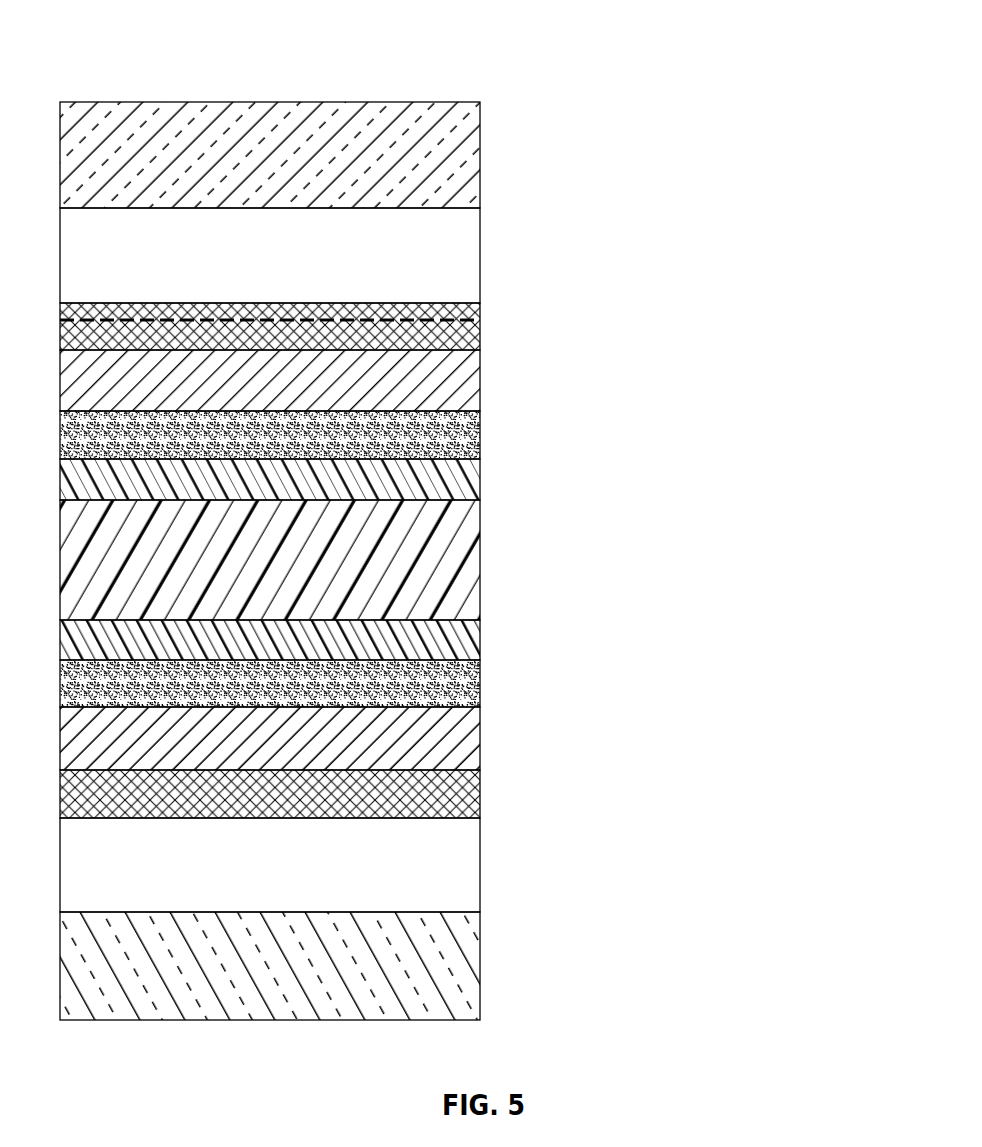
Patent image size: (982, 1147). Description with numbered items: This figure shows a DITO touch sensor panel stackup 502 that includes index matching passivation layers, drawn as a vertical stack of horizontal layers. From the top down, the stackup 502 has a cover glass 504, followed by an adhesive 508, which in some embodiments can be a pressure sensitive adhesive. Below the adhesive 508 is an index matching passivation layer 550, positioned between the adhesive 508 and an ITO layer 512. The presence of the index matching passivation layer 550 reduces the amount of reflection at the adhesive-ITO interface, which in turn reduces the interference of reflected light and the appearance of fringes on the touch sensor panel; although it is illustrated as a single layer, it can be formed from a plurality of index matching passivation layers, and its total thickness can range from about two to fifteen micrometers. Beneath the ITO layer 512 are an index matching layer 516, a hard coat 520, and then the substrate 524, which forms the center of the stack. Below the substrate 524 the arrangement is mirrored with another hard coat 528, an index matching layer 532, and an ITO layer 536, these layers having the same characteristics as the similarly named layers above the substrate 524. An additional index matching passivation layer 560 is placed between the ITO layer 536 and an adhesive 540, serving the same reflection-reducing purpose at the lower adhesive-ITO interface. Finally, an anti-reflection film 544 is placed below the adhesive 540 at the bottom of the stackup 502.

The DITO touch sensor panel stackup 502 is at (481, 47).
The cover glass 504 is at (480, 163).
The adhesive 508 is at (480, 262).
The index matching passivation layer 550 is at (480, 325).
The ITO layer 512 is at (480, 388).
The index matching layer 516 is at (480, 437).
The hard coat 520 is at (480, 487).
The substrate 524 is at (480, 557).
The hard coat 528 is at (480, 648).
The index matching layer 532 is at (480, 685).
The ITO layer 536 is at (480, 747).
The index matching passivation layer 560 is at (480, 793).
The adhesive 540 is at (480, 880).
The anti-reflection film 544 is at (480, 975).